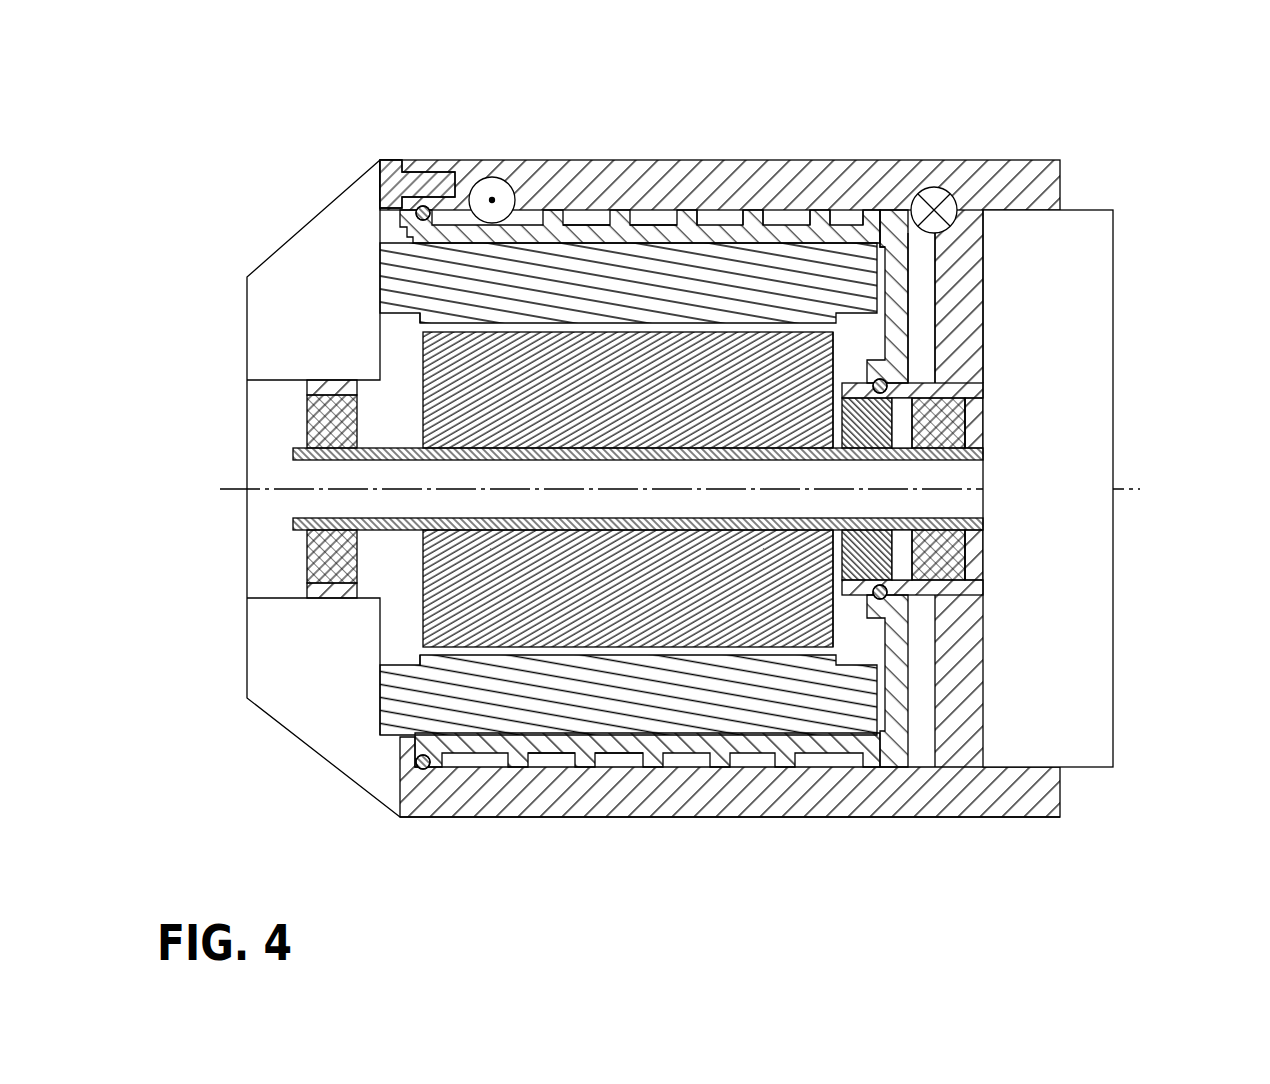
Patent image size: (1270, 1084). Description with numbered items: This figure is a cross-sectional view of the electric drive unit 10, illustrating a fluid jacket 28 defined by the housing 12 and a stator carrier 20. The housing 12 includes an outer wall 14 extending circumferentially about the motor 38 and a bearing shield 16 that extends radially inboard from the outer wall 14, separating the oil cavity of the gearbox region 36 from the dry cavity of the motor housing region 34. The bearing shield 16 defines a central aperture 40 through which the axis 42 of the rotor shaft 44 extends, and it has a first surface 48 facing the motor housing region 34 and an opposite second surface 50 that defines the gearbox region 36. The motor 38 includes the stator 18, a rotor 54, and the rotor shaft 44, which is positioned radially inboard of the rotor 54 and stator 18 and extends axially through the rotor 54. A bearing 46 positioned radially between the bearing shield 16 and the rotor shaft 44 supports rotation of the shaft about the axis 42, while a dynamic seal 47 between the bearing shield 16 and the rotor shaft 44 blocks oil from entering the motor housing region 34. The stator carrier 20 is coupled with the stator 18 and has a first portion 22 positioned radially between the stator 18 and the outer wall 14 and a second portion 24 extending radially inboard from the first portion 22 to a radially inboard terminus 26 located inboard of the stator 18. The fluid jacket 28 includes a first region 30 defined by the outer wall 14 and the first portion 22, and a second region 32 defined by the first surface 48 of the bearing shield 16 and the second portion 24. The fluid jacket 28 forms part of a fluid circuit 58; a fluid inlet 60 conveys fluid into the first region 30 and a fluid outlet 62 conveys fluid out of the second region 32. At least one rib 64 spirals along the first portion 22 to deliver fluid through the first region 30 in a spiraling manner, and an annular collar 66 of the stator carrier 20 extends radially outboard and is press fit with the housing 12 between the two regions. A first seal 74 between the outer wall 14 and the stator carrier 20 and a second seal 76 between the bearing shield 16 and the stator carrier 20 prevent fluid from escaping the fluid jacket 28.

The electric drive unit 10 is at (941, 127).
The housing 12 is at (717, 156).
The outer wall 14 is at (685, 163).
The bearing shield 16 is at (955, 330).
The stator 18 is at (587, 267).
The stator carrier 20 is at (648, 230).
The first portion 22 is at (778, 230).
The second portion 24 is at (895, 295).
The radially inboard terminus 26 is at (917, 380).
The fluid jacket 28 is at (729, 208).
The first region 30 is at (802, 208).
The second region 32 is at (930, 265).
The motor housing region 34 is at (853, 354).
The gearbox region 36 is at (1080, 437).
The motor 38 is at (445, 337).
The central aperture 40 is at (897, 566).
The axis 42 is at (1160, 481).
The rotor shaft 44 is at (968, 560).
The bearing 46 is at (968, 437).
The dynamic seal 47 is at (858, 558).
The first surface 48 is at (892, 208).
The second surface 50 is at (985, 228).
The rotor 54 is at (493, 353).
The fluid circuit 58 is at (473, 176).
The fluid inlet 60 is at (503, 190).
The fluid outlet 62 is at (950, 213).
The rib 64 is at (592, 247).
The annular collar 66 is at (888, 208).
The first seal 74 is at (424, 204).
The second seal 76 is at (950, 413).